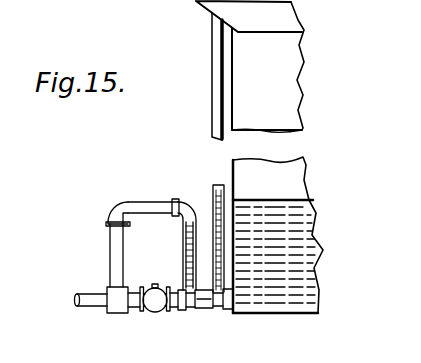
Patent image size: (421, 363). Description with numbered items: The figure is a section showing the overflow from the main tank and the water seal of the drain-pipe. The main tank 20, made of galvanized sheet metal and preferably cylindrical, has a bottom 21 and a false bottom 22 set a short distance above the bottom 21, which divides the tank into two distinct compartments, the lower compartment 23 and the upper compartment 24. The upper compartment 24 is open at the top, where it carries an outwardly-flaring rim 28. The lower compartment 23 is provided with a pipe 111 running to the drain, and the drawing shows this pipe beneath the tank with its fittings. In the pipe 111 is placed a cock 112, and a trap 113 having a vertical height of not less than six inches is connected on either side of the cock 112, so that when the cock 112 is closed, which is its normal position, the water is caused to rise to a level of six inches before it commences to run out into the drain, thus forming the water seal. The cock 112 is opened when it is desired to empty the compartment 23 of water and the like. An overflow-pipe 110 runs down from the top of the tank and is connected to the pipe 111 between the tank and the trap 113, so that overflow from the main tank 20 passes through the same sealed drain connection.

The outwardly-flaring rim 28 is at (249, 16).
The main tank 20 is at (267, 80).
The upper compartment 24 is at (290, 66).
The overflow-pipe 110 is at (212, 137).
The false bottom 22 is at (283, 200).
The lower compartment 23 is at (322, 250).
The bottom 21 is at (308, 311).
The trap 113 is at (145, 202).
The pipe 111 is at (97, 306).
The cock 112 is at (151, 311).